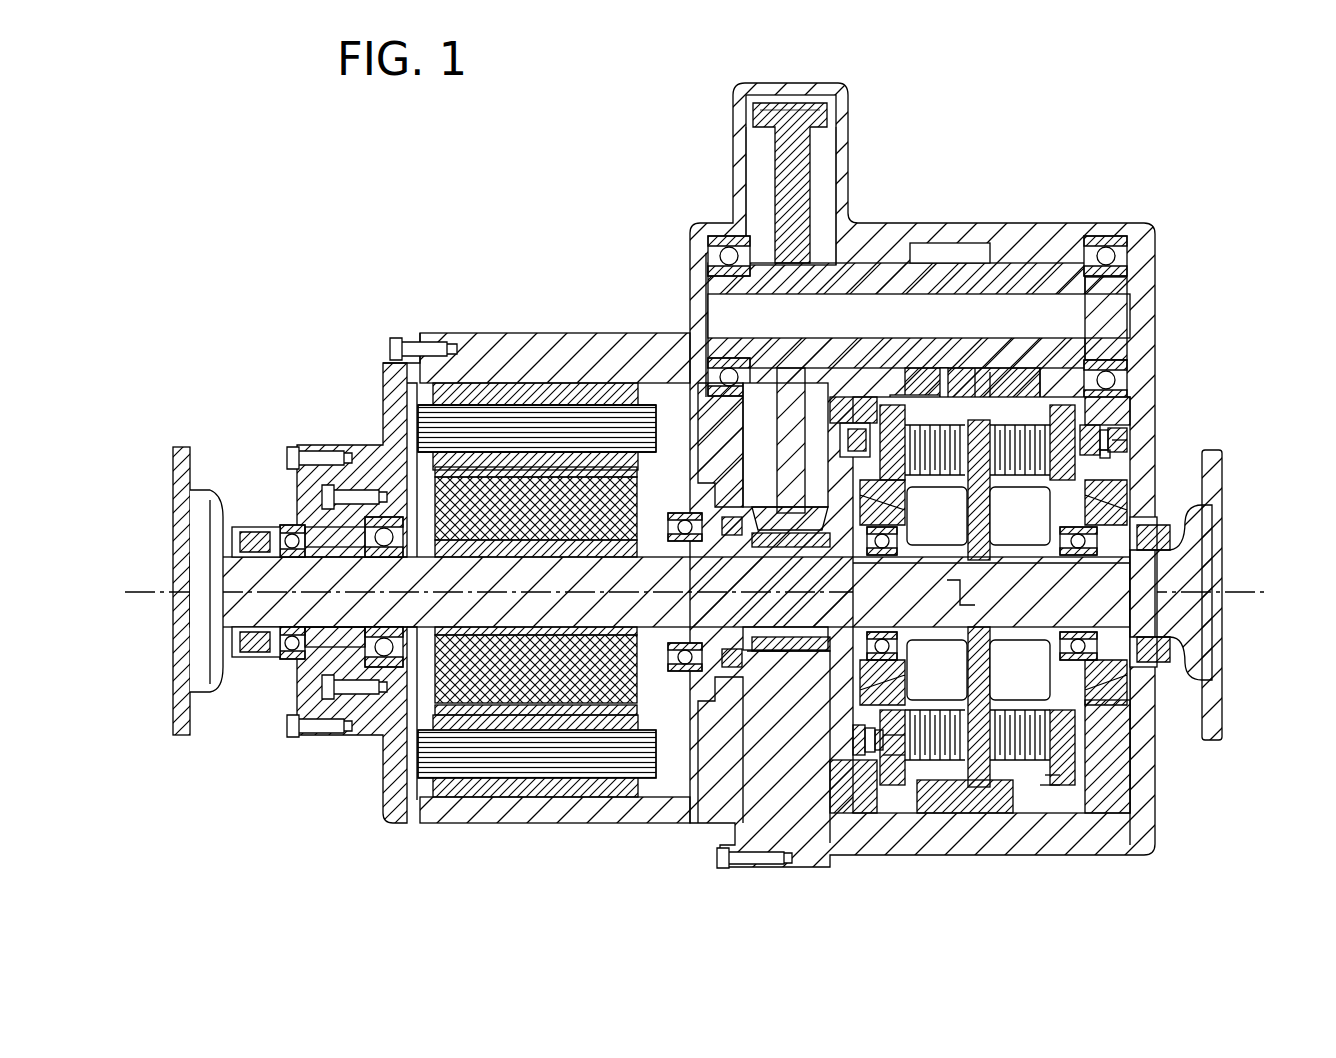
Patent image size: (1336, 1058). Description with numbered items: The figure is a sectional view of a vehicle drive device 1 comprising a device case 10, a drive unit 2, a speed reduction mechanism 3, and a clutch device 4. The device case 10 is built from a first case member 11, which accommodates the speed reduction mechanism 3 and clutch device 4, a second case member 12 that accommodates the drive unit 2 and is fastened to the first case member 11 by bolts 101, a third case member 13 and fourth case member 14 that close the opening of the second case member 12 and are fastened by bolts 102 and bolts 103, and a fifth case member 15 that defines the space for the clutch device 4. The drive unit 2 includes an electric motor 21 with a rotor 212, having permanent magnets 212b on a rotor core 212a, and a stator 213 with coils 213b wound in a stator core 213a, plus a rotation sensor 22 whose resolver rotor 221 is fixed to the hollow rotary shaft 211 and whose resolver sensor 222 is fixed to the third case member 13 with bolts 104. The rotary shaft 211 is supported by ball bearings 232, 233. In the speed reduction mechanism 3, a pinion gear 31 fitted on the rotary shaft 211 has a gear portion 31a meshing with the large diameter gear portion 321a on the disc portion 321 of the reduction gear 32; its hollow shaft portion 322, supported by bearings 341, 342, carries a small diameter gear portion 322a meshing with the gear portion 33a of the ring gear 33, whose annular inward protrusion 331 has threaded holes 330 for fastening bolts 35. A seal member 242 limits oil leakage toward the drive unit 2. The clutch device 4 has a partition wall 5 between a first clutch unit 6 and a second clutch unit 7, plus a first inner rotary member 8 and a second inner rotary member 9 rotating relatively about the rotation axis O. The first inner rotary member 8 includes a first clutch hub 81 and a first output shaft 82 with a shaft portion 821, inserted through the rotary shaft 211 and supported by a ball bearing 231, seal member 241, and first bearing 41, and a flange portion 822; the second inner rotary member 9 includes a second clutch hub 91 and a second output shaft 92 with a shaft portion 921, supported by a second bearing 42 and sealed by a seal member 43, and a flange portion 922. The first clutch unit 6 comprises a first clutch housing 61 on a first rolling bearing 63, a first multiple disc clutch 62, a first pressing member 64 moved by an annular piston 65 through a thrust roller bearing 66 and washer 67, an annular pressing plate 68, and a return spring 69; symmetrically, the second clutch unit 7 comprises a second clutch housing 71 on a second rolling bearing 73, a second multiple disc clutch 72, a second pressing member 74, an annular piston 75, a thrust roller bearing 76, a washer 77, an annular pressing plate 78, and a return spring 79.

The vehicle drive device 1 is at (1195, 177).
The drive unit 2 is at (404, 786).
The speed reduction mechanism 3 is at (863, 245).
The clutch device 4 is at (1040, 365).
The partition wall 5 is at (975, 403).
The first clutch unit 6 is at (904, 794).
The second clutch unit 7 is at (1063, 785).
The first inner rotary member 8 is at (160, 619).
The second inner rotary member 9 is at (1236, 623).
The device case 10 is at (1130, 215).
The first case member 11 is at (1112, 852).
The second case member 12 is at (505, 805).
The third case member 13 is at (392, 810).
The fourth case member 14 is at (305, 733).
The fifth case member 15 is at (840, 832).
The electric motor 21 is at (605, 798).
The rotation sensor 22 is at (225, 690).
The pinion gear 31 is at (797, 652).
The gear portion 31a is at (783, 652).
The reduction gear 32 is at (661, 148).
The ring gear 33 is at (1010, 397).
The gear portion 33a is at (990, 372).
The fastening bolts 35 is at (1018, 412).
The first bearing 41 is at (877, 557).
The second bearing 42 is at (1065, 652).
The seal member 43 is at (1160, 645).
The first clutch housing 61 is at (937, 593).
The first multiple disc clutch 62 is at (960, 755).
The first rolling bearing 63 is at (895, 680).
The first pressing member 64 is at (880, 728).
The annular piston 65 is at (880, 738).
The thrust roller bearing 66 is at (885, 745).
The washer 67 is at (900, 755).
The annular pressing plate 68 is at (900, 762).
The return spring 69 is at (925, 760).
The second clutch housing 71 is at (1055, 485).
The second multiple disc clutch 72 is at (1010, 755).
The second rolling bearing 73 is at (1110, 680).
The second pressing member 74 is at (1067, 417).
The annular piston 75 is at (1113, 433).
The thrust roller bearing 76 is at (1107, 438).
The washer 77 is at (1110, 427).
The annular pressing plate 78 is at (1107, 447).
The return spring 79 is at (1040, 760).
The first clutch hub 81 is at (885, 560).
The first output shaft 82 is at (120, 478).
The second clutch hub 91 is at (1000, 560).
The second output shaft 92 is at (1285, 480).
The bolts 101 is at (750, 858).
The bolts 102 is at (392, 346).
The bolts 103 is at (290, 450).
The bolts 104 is at (345, 700).
The rotary shaft 211 is at (447, 493).
The rotor 212 is at (300, 360).
The rotor core 212a is at (450, 493).
The permanent magnets 212b is at (440, 420).
The stator 213 is at (591, 289).
The stator core 213a is at (570, 393).
The coils 213b is at (523, 410).
The resolver rotor 221 is at (340, 637).
The resolver sensor 222 is at (340, 657).
The ball bearing 231 is at (290, 522).
The ball bearing 232 is at (682, 671).
The ball bearing 233 is at (380, 670).
The seal member 241 is at (250, 528).
The seal member 242 is at (727, 665).
The disc portion 321 is at (787, 168).
The large diameter gear portion 321a is at (765, 108).
The hollow shaft portion 322 is at (817, 280).
The small diameter gear portion 322a is at (1005, 253).
The threaded holes 330 is at (925, 405).
The annular inward protrusion 331 is at (943, 403).
The bearing 341 is at (733, 262).
The bearing 342 is at (1125, 252).
The shaft portion 821 is at (228, 560).
The flange portion 822 is at (183, 462).
The shaft portion 921 is at (1165, 565).
The flange portion 922 is at (1210, 470).
The rotation axis O is at (1240, 590).